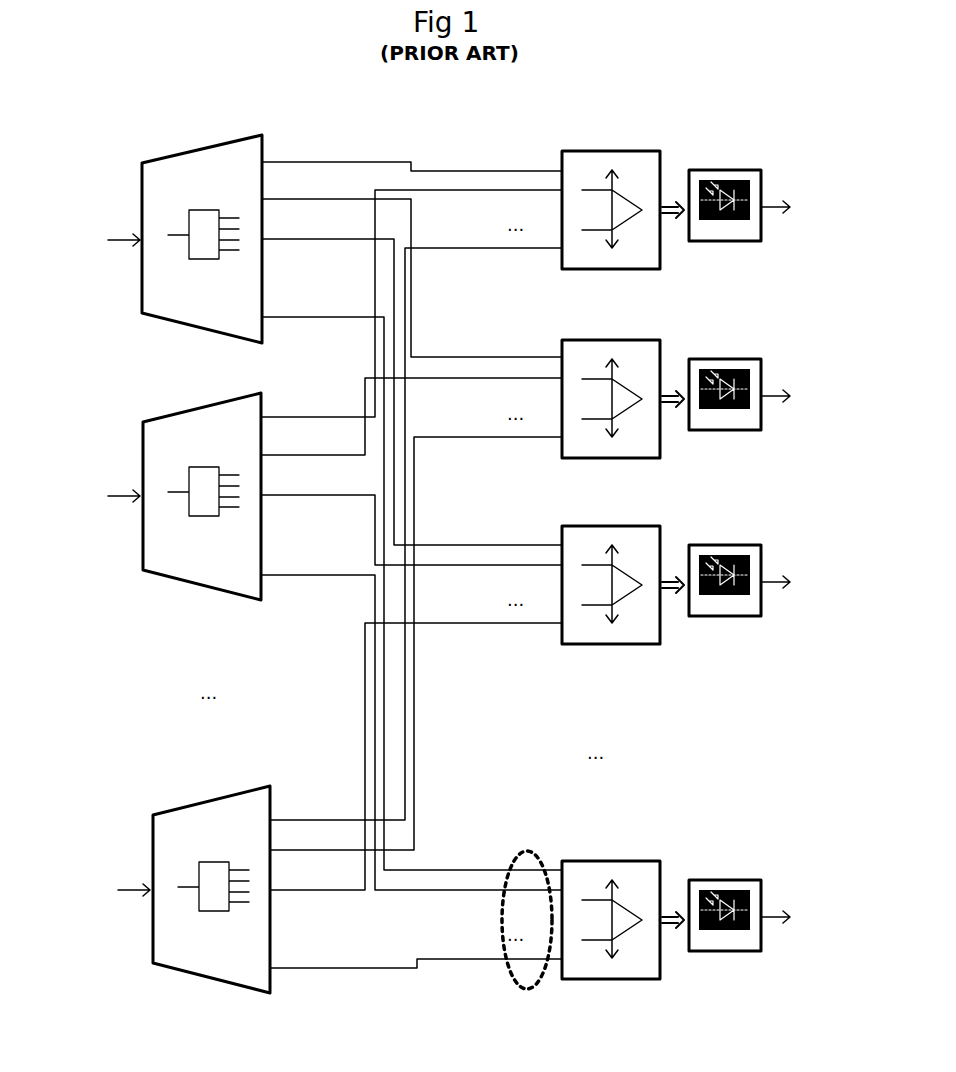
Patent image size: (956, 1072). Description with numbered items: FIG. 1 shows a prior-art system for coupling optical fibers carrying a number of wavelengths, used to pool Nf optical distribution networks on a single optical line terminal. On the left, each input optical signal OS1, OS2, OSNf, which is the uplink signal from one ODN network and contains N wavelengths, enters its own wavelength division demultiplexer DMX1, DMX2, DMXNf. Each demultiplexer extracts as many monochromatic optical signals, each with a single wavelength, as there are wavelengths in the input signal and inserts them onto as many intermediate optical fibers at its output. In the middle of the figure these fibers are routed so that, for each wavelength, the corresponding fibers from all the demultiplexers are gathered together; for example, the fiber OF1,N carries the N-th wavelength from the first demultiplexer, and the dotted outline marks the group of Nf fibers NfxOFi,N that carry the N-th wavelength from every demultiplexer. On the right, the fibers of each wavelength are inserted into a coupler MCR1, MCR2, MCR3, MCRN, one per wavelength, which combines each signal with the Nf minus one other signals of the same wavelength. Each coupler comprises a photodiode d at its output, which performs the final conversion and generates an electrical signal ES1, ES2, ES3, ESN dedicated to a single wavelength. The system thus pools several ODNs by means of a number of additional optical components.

The wavelength division demultiplexer DMX1 is at (217, 152).
The wavelength division demultiplexer DMX2 is at (217, 405).
The wavelength division demultiplexer DMXNf is at (227, 798).
The optical signal OS1 is at (86, 243).
The optical signal OS2 is at (86, 499).
The optical signal OSNf is at (96, 894).
The coupler MCR1 is at (634, 150).
The coupler MCR2 is at (634, 339).
The coupler MCR3 is at (634, 525).
The coupler MCRN is at (634, 860).
The photodiode d is at (731, 169).
The electrical signal ES1 is at (824, 208).
The electrical signal ES2 is at (824, 397).
The electrical signal ES3 is at (824, 583).
The electrical signal ESN is at (826, 918).
The optical fiber OF1,N is at (452, 868).
The optical fibers NfxOFi,N is at (511, 976).